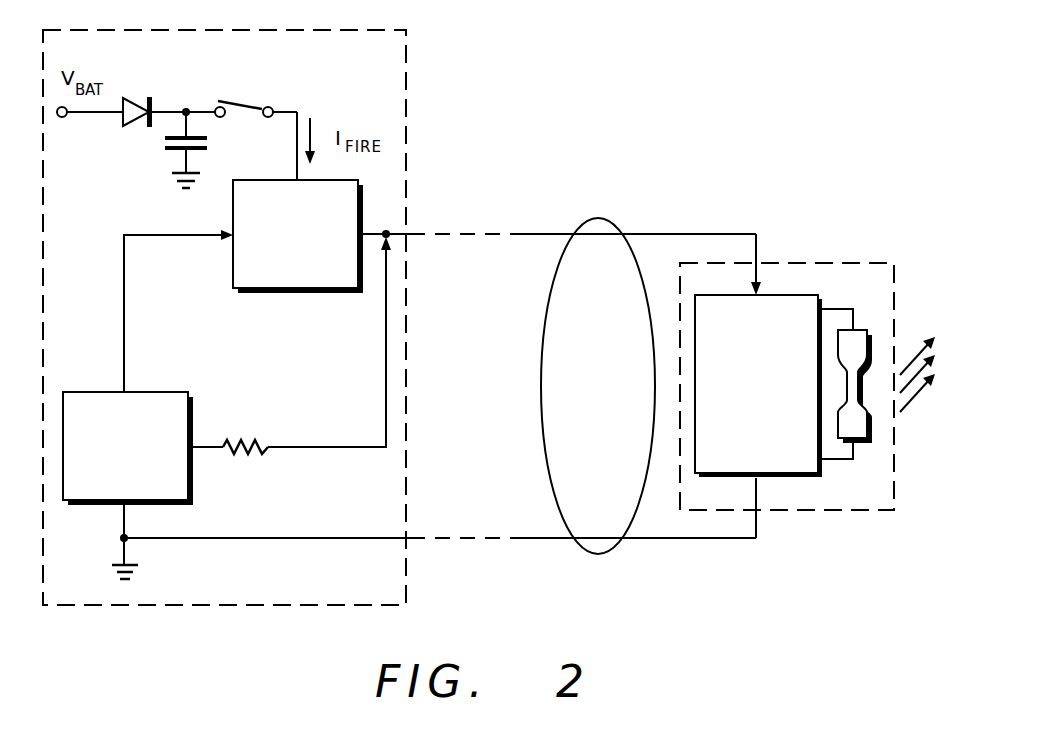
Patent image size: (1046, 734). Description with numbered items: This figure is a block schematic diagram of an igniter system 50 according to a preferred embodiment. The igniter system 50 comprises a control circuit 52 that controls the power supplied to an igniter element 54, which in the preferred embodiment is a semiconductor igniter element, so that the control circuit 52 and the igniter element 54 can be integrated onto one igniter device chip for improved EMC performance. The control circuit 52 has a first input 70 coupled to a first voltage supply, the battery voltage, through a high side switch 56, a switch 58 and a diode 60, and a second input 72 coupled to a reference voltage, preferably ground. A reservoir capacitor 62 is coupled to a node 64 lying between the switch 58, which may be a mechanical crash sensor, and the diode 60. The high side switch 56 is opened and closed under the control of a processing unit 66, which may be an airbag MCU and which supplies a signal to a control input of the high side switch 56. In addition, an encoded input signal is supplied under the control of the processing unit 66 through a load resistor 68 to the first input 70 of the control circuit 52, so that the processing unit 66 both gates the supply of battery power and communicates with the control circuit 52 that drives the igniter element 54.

The igniter system 50 is at (540, 98).
The control circuit 52 is at (802, 295).
The igniter element 54 is at (870, 441).
The high side switch 56 is at (240, 180).
The switch 58 is at (243, 106).
The diode 60 is at (151, 106).
The reservoir capacitor 62 is at (165, 138).
The node 64 is at (190, 114).
The processing unit 66 is at (140, 392).
The load resistor 68 is at (256, 441).
The first input 70 is at (763, 292).
The second input 72 is at (763, 479).